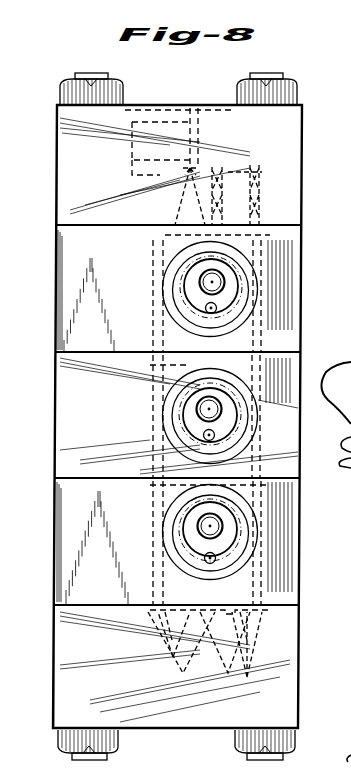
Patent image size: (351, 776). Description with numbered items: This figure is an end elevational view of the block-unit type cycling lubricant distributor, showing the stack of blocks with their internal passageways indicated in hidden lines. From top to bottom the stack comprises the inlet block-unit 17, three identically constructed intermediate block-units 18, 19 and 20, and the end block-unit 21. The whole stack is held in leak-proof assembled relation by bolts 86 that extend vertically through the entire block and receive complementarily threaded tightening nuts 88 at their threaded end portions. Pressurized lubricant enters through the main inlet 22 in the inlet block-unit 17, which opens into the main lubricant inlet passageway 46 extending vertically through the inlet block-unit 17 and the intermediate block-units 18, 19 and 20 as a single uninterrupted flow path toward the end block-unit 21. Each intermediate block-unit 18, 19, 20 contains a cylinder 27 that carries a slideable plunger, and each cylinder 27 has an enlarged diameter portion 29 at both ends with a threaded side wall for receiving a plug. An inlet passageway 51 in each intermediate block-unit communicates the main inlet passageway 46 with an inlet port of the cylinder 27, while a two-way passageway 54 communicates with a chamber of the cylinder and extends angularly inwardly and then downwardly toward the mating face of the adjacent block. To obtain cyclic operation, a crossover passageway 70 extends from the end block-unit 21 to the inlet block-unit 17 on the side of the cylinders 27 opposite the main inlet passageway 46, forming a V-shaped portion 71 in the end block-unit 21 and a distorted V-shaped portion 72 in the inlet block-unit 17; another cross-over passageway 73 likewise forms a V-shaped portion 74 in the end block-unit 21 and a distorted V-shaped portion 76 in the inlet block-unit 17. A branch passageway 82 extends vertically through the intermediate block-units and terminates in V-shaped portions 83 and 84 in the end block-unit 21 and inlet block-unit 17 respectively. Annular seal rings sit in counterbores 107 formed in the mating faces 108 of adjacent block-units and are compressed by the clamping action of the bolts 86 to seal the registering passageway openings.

The inlet block-unit 17 is at (57, 160).
The intermediate block-unit 18 is at (57, 268).
The intermediate block-unit 19 is at (56, 412).
The intermediate block-unit 20 is at (55, 524).
The end block-unit 21 is at (54, 654).
The main inlet 22 is at (158, 106).
The cylinder 27 is at (222, 285).
The enlarged diameter portion 29 is at (184, 294).
The main lubricant inlet passageway 46 is at (160, 185).
The inlet passageway 51 is at (165, 246).
The two-way passageway 54 is at (217, 308).
The crossover passageway 70 is at (268, 246).
The V-shaped portion 71 is at (250, 628).
The distorted V-shaped portion 72 is at (240, 172).
The cross-over passageway 73 is at (268, 273).
The V-shaped portion 74 is at (247, 677).
The distorted V-shaped portion 76 is at (262, 176).
The branch passageway 82 is at (163, 262).
The V-shaped portion 83 is at (173, 657).
The V-shaped portion 84 is at (204, 160).
The bolt 86 is at (88, 73).
The tightening nut 88 is at (112, 92).
The counterbore 107 is at (152, 368).
The mating face 108 is at (132, 351).